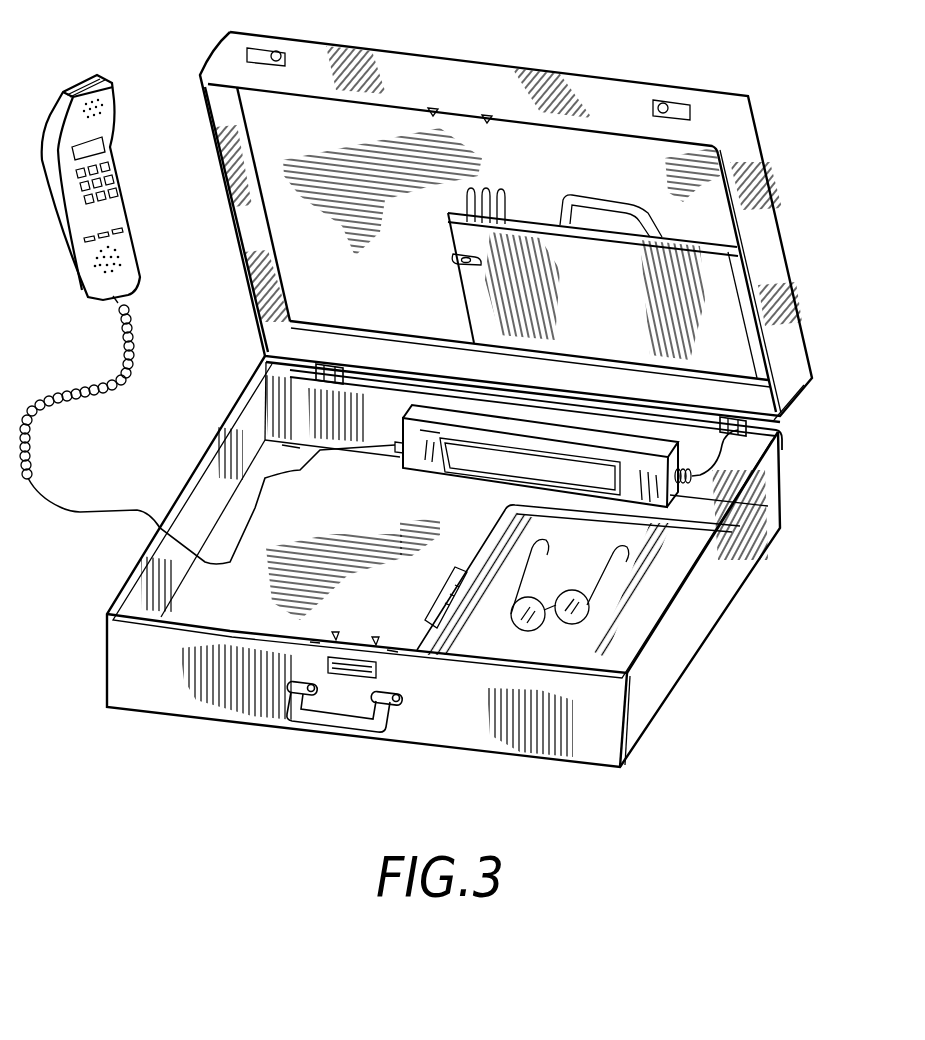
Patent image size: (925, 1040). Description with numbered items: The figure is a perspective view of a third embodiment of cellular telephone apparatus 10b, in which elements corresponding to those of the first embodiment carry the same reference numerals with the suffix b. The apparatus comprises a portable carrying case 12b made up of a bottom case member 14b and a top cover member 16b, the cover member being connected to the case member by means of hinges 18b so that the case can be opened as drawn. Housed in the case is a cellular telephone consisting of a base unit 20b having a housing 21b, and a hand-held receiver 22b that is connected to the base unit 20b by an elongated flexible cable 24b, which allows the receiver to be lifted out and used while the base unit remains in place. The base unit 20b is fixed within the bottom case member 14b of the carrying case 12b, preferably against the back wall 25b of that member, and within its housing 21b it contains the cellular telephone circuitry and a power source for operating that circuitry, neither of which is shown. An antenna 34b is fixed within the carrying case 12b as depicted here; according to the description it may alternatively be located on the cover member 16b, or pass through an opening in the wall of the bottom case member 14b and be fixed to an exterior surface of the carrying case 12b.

The cellular telephone apparatus 10b is at (808, 292).
The portable carrying case 12b is at (793, 434).
The bottom case member 14b is at (693, 643).
The top cover member 16b is at (467, 70).
The hinges 18b is at (332, 366).
The base unit 20b is at (388, 457).
The housing 21b is at (430, 473).
The hand-held receiver 22b is at (63, 90).
The elongated flexible cable 24b is at (68, 510).
The back wall 25b is at (297, 395).
The antenna 34b is at (603, 417).